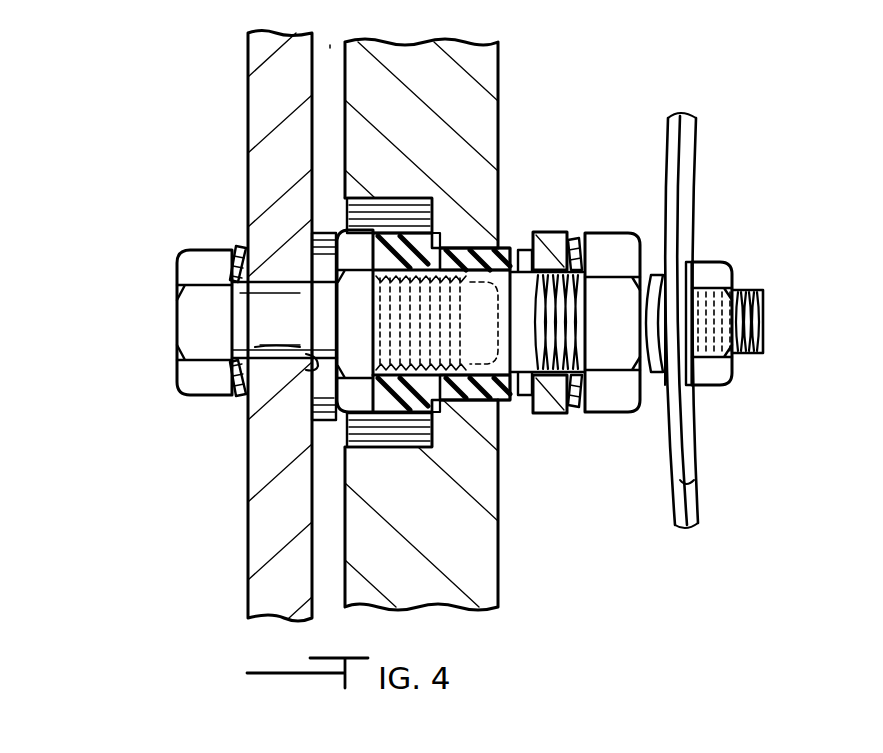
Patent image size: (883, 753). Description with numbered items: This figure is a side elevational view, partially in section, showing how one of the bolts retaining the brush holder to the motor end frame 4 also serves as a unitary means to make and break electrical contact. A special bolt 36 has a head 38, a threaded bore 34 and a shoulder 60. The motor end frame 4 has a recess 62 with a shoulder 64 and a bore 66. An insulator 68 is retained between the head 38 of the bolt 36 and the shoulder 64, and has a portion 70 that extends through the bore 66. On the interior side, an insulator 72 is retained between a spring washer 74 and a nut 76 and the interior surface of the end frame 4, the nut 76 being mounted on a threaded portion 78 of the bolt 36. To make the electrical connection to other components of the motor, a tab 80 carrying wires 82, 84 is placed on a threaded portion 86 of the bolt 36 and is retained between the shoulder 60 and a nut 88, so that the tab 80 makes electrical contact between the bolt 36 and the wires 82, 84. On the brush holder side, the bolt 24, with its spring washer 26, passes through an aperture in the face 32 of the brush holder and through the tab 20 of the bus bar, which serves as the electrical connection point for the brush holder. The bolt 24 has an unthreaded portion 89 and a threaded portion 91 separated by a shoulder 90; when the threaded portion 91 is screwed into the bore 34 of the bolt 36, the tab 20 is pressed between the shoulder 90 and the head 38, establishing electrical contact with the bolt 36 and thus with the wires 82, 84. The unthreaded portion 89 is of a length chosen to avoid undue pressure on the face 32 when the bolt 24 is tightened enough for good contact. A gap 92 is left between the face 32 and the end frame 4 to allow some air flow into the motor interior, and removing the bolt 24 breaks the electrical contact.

The motor end frame 4 is at (400, 62).
The tab 20 is at (322, 232).
The bolt 24 is at (185, 328).
The spring washer 26 is at (240, 248).
The face 32 is at (258, 105).
The threaded bore 34 is at (522, 240).
The bolt 36 is at (477, 302).
The head 38 is at (357, 228).
The shoulder 60 is at (667, 277).
The recess 62 is at (392, 198).
The shoulder 64 is at (440, 233).
The bore 66 is at (478, 226).
The insulator 68 is at (452, 392).
The portion 70 is at (450, 413).
The insulator 72 is at (540, 400).
The spring washer 74 is at (572, 400).
The nut 76 is at (612, 413).
The threaded portion 78 is at (650, 395).
The tab 80 is at (688, 260).
The wire 82 is at (690, 187).
The wire 84 is at (693, 477).
The threaded portion 86 is at (765, 325).
The nut 88 is at (720, 372).
The unthreaded portion 89 is at (262, 350).
The shoulder 90 is at (310, 356).
The threaded portion 91 is at (403, 335).
The gap 92 is at (331, 48).